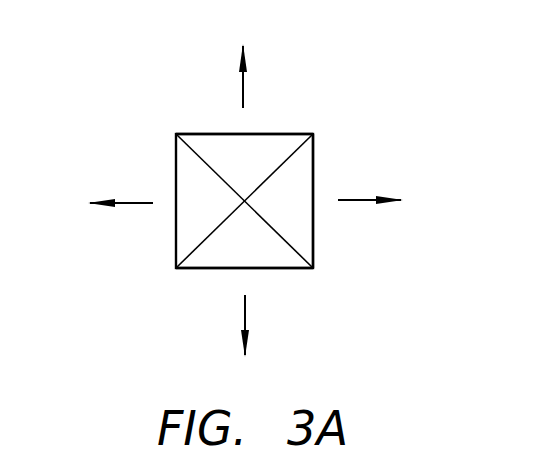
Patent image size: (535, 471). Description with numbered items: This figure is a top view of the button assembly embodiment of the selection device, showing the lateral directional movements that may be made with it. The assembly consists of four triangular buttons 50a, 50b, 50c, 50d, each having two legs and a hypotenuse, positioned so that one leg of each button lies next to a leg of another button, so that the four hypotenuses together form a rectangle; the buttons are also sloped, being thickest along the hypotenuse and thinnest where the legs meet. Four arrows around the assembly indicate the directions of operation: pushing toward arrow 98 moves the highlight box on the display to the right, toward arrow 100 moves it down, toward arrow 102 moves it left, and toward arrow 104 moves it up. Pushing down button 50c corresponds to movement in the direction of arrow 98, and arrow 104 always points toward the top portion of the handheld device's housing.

The triangular button 50a is at (190, 223).
The triangular button 50b is at (193, 140).
The triangular button 50c is at (300, 230).
The triangular button 50d is at (272, 262).
The arrow 98 is at (388, 200).
The arrow 100 is at (244, 345).
The arrow 102 is at (100, 203).
The arrow 104 is at (245, 62).